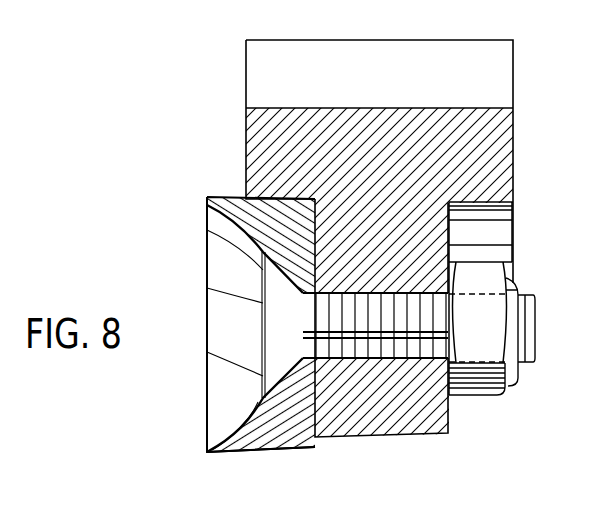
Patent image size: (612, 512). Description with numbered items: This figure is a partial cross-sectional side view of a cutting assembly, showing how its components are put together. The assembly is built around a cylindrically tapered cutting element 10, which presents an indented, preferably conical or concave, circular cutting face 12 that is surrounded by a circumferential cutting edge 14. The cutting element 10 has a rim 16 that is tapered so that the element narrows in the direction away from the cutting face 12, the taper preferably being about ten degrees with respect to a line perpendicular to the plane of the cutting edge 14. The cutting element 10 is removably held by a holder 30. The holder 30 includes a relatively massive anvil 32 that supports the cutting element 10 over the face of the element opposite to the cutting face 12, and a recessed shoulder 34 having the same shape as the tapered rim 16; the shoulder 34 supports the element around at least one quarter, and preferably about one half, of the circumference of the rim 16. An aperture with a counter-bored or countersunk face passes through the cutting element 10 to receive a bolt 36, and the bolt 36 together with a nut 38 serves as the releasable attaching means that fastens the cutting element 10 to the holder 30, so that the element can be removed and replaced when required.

The cutting element 10 is at (251, 462).
The cutting face 12 is at (220, 440).
The cutting edge 14 is at (206, 451).
The rim 16 is at (226, 196).
The holder 30 is at (416, 445).
The anvil 32 is at (349, 420).
The recessed shoulder 34 is at (266, 196).
The bolt 36 is at (537, 328).
The nut 38 is at (481, 390).